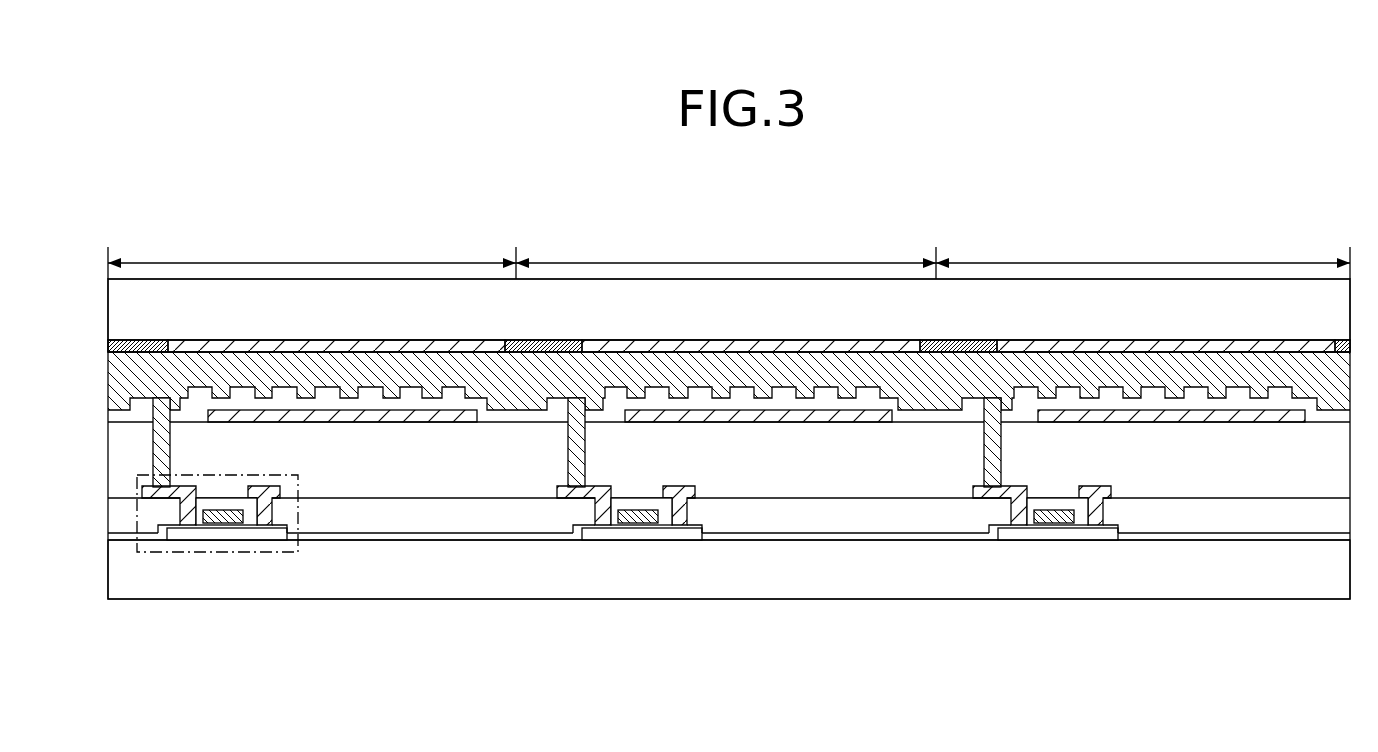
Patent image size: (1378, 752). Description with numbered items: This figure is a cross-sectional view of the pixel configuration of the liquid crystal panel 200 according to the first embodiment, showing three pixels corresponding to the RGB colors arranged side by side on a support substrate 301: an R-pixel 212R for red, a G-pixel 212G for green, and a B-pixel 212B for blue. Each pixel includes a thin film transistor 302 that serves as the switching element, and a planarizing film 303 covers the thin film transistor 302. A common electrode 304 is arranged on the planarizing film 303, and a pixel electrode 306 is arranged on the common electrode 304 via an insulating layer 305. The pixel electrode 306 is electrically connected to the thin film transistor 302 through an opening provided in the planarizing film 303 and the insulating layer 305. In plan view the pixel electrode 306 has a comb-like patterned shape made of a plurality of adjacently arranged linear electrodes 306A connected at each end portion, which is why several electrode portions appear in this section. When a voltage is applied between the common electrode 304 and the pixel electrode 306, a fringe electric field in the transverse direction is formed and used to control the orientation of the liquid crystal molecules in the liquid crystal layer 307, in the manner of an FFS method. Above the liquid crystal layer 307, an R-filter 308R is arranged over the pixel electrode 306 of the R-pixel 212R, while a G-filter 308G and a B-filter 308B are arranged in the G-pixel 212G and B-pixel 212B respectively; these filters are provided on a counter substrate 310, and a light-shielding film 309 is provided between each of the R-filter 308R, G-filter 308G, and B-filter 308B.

The liquid crystal panel 200 is at (1238, 192).
The R-pixel 212R is at (312, 256).
The G-pixel 212G is at (726, 256).
The B-pixel 212B is at (1143, 256).
The support substrate 301 is at (165, 590).
The thin film transistor 302 is at (297, 520).
The planarizing film 303 is at (118, 452).
The common electrode 304 is at (415, 421).
The insulating layer 305 is at (512, 421).
The pixel electrode 306 is at (163, 447).
The linear electrodes 306A is at (412, 385).
The liquid crystal layer 307 is at (112, 380).
The R-filter 308R is at (235, 345).
The G-filter 308G is at (682, 345).
The B-filter 308B is at (1057, 345).
The light-shielding film 309 is at (112, 343).
The counter substrate 310 is at (112, 295).